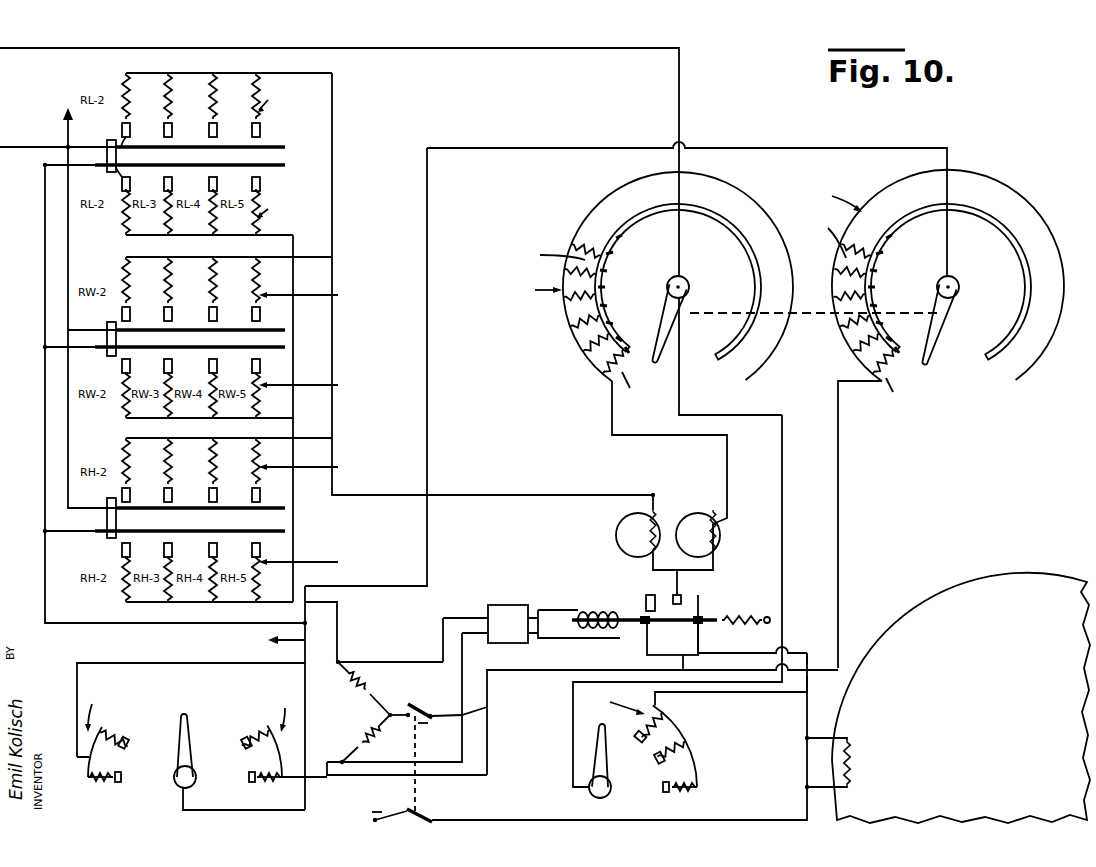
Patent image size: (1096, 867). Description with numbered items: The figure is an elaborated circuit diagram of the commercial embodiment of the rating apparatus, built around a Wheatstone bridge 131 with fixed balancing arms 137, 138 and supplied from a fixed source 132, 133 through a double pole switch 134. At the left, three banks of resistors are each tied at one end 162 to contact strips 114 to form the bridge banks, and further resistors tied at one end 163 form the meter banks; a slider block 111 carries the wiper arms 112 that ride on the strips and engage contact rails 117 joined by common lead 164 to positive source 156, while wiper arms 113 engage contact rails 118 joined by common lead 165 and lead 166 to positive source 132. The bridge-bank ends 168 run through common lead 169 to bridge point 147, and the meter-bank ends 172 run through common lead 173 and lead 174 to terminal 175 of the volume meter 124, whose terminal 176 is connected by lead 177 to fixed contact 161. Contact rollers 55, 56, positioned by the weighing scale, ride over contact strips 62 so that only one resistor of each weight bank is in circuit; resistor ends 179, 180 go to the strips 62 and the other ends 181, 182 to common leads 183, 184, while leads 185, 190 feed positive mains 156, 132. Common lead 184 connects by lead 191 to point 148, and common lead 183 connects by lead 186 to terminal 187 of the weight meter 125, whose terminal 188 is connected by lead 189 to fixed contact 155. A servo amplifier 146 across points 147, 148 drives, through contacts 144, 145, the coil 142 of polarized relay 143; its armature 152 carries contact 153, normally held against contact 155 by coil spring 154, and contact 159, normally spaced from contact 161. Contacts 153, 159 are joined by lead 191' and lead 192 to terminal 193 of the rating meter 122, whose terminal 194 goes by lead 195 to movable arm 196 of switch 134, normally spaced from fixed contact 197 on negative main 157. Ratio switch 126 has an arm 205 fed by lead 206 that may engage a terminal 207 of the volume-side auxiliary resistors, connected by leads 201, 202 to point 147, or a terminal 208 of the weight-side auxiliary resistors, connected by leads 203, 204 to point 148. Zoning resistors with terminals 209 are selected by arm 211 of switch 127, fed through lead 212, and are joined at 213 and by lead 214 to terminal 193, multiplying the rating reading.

The contact roller 55 is at (664, 310).
The contact roller 56 is at (940, 330).
The contact strip 62 is at (604, 287).
The slider block 111 is at (107, 150).
The wiper arm 112 is at (124, 128).
The wiper arm 113 is at (122, 180).
The contact strip 114 is at (260, 130).
The contact rail 117 is at (150, 146).
The contact rail 118 is at (150, 166).
The rating meter 122 is at (992, 580).
The meter 124 is at (616, 530).
The weight meter 125 is at (716, 520).
The ratio switch 126 is at (176, 789).
The switch 127 is at (592, 795).
The Wheatstone bridge 131 is at (344, 718).
The source of fixed potential 132 is at (325, 698).
The source of fixed potential 133 is at (478, 712).
The switch 134 is at (410, 700).
The arm of Wheatstone bridge 137 is at (368, 684).
The arm of Wheatstone bridge 138 is at (375, 739).
The coil 142 is at (588, 612).
The polarized relay 143 is at (620, 628).
The contact 144 is at (544, 610).
The contact 145 is at (556, 640).
The servo amplifier 146 is at (500, 605).
The point of Wheatstone bridge 147 is at (340, 660).
The point of Wheatstone bridge 148 is at (342, 764).
The armature 152 is at (627, 615).
The switch arm 153 is at (646, 596).
The coil spring 154 is at (734, 622).
The fixed contact 155 is at (672, 637).
The source of potential 156 is at (62, 112).
The source of potential 157 is at (373, 822).
The switch arm 159 is at (704, 600).
The fixed contact 161 is at (682, 597).
The resistor end 162 is at (260, 186).
The resistor end 163 is at (172, 125).
The common lead 164 is at (45, 205).
The common lead 165 is at (45, 283).
The lead 166 is at (156, 623).
The ends of resistor banks 168 is at (126, 235).
The common lead 169 is at (333, 345).
The ends of resistor banks 172 is at (256, 73).
The common lead 173 is at (333, 185).
The lead 174 is at (478, 495).
The terminal 175 is at (655, 493).
The terminal 176 is at (630, 565).
The lead 177 is at (670, 538).
The resistor end 179 is at (608, 380).
The resistor end 180 is at (907, 357).
The resistor end 181 is at (612, 400).
The resistor end 182 is at (878, 388).
The common lead 183 is at (566, 330).
The common lead 184 is at (848, 350).
The lead 185 is at (681, 116).
The lead 186 is at (654, 435).
The terminal 187 is at (730, 510).
The terminal 188 is at (722, 540).
The lead 189 is at (716, 562).
The lead 190 is at (800, 148).
The lead 191 is at (868, 472).
The lead 191' is at (706, 688).
The lead 192 is at (800, 648).
The terminal 193 is at (806, 740).
The terminal 194 is at (806, 789).
The lead 195 is at (522, 820).
The movable arm 196 is at (428, 815).
The fixed contact 197 is at (407, 810).
The lead 201 is at (77, 773).
The lead 202 is at (77, 672).
The lead 203 is at (282, 780).
The lead 204 is at (318, 762).
The switch arm 205 is at (184, 715).
The lead 206 is at (258, 810).
The terminal 207 is at (122, 782).
The terminal 208 is at (242, 744).
The terminal 209 is at (638, 742).
The switch arm 211 is at (596, 742).
The lead 212 is at (573, 698).
The terminal connection 213 is at (700, 752).
The lead 214 is at (750, 692).